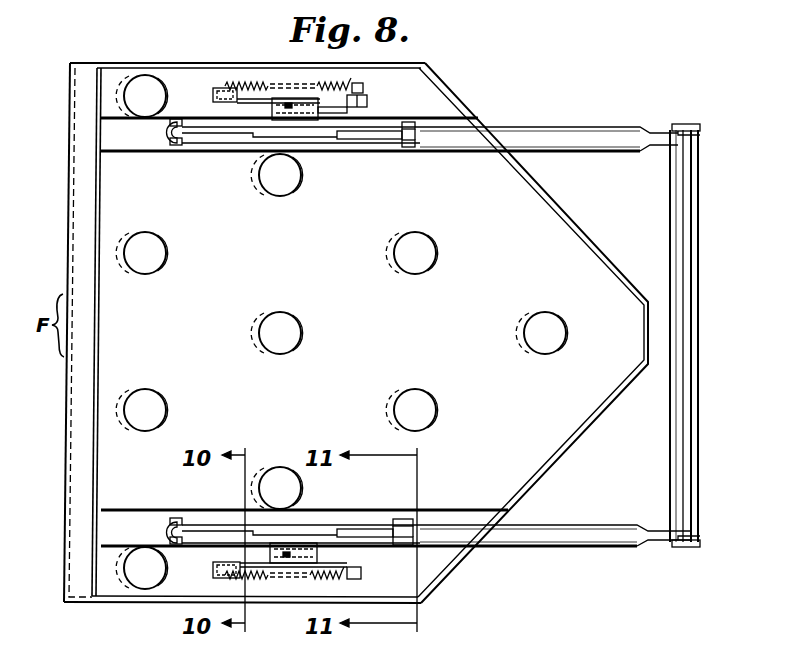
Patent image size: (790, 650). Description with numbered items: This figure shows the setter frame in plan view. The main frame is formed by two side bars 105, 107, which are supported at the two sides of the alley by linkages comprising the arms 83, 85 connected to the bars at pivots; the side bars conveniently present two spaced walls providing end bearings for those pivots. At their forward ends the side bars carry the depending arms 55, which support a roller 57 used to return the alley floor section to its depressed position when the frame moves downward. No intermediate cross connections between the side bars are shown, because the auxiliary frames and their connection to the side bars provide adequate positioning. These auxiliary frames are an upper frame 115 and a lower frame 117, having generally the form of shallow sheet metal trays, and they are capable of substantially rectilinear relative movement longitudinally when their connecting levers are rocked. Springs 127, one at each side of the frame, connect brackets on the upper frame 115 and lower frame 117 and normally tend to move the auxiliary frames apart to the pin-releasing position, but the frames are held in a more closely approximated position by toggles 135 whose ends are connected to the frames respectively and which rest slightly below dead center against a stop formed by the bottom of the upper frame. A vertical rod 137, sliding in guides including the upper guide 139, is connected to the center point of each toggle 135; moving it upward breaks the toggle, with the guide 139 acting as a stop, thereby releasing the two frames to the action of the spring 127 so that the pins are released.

The depending arms 55 is at (700, 128).
The roller 57 is at (692, 410).
The arm 83 is at (229, 133).
The arm 85 is at (380, 134).
The side bar 105 is at (600, 523).
The side bar 107 is at (563, 127).
The upper frame 115 is at (575, 437).
The lower frame 117 is at (70, 562).
The spring 127 is at (330, 86).
The toggle 135 is at (273, 96).
The vertical rod 137 is at (293, 108).
The upper guide 139 is at (367, 104).